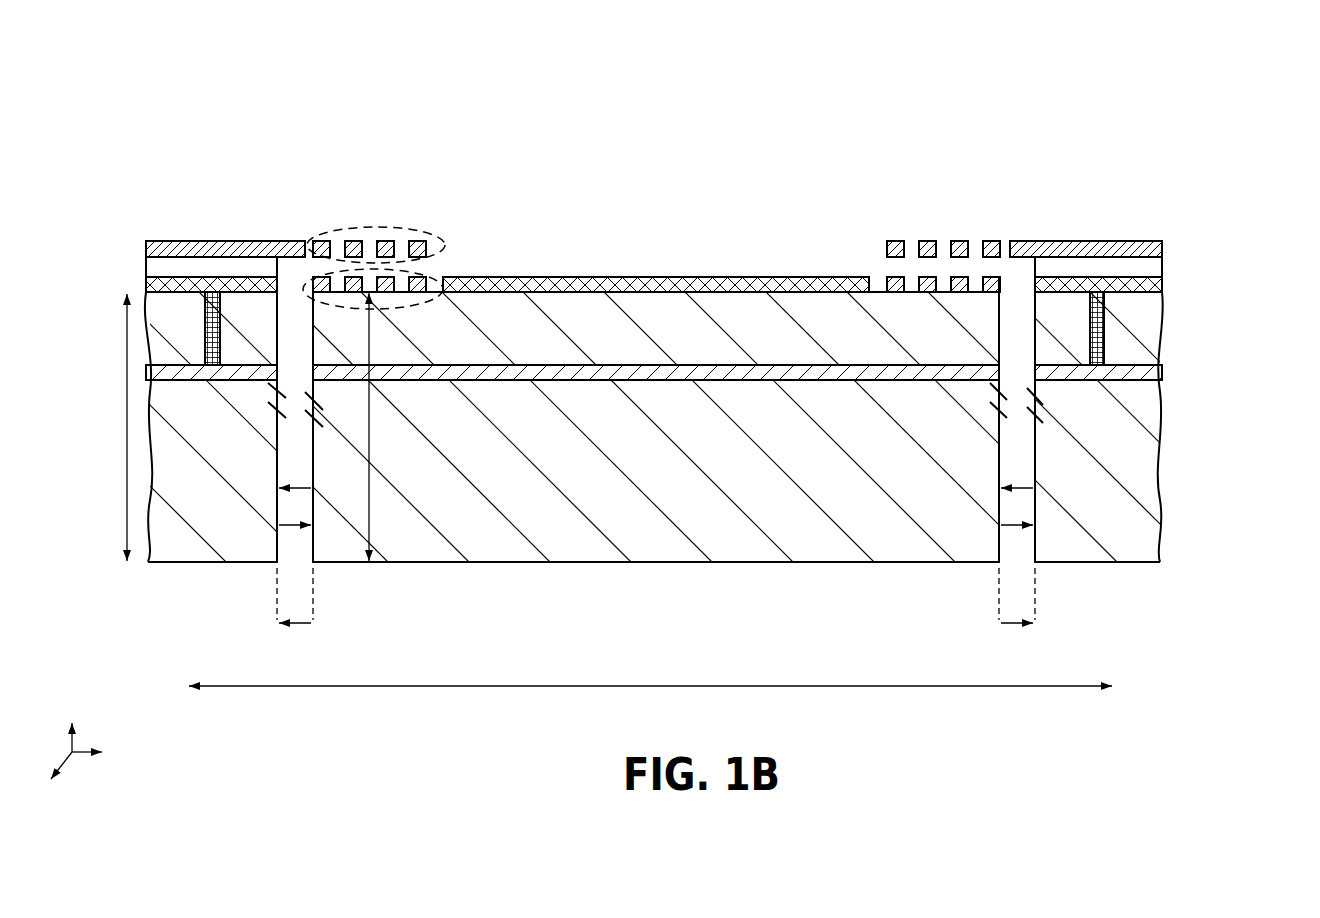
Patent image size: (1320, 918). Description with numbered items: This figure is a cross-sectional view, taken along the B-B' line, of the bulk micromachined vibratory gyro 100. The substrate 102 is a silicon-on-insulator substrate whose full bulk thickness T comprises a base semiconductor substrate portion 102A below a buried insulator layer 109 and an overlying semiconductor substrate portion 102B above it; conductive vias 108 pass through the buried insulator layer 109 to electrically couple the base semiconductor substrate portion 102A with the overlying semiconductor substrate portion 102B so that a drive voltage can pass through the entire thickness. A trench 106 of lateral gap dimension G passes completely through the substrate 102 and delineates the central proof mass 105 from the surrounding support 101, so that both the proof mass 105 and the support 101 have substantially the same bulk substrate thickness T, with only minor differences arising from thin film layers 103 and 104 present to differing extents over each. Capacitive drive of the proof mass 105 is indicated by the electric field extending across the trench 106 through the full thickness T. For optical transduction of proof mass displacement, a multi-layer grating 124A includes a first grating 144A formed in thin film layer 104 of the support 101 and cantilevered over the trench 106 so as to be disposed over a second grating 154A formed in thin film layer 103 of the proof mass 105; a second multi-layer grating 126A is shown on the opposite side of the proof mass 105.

The bulk micromachined vibratory gyro 100 is at (176, 156).
The support 101 is at (278, 572).
The substrate 102 is at (1258, 287).
The base semiconductor substrate portion 102A is at (1103, 515).
The overlying semiconductor substrate portion 102B is at (1085, 331).
The thin film layer 103 is at (1162, 285).
The thin film layer 104 is at (1087, 250).
The proof mass 105 is at (999, 572).
The trench 106 is at (1031, 346).
The conductive via 108 is at (205, 328).
The buried insulator layer 109 is at (1162, 373).
The multi-layer grating 124A is at (443, 217).
The multi-layer grating 126A is at (1010, 217).
The first grating 144A is at (425, 232).
The second grating 154A is at (417, 305).